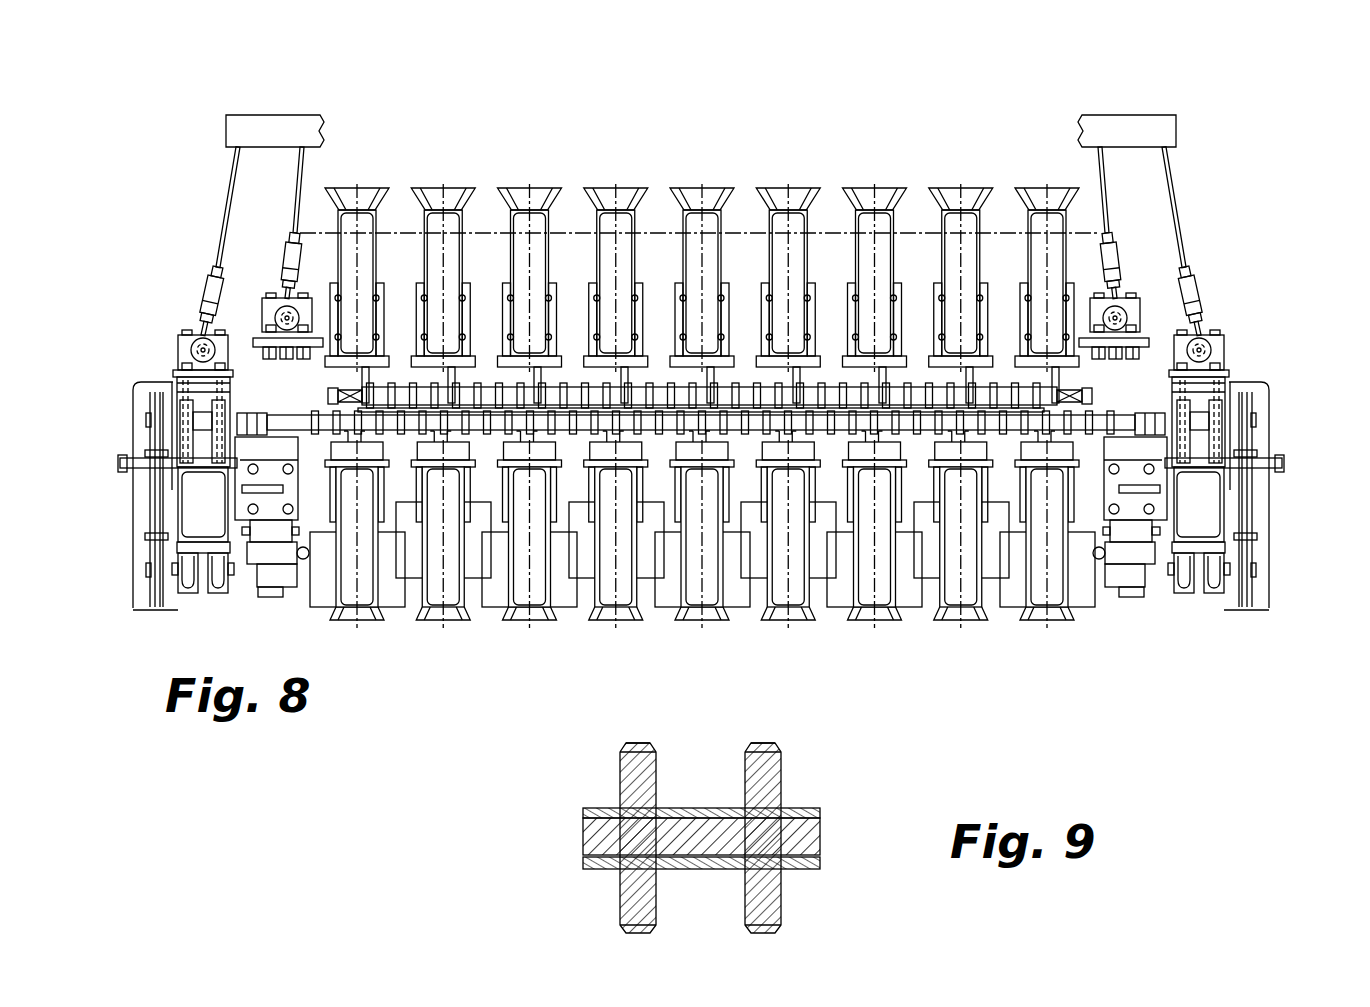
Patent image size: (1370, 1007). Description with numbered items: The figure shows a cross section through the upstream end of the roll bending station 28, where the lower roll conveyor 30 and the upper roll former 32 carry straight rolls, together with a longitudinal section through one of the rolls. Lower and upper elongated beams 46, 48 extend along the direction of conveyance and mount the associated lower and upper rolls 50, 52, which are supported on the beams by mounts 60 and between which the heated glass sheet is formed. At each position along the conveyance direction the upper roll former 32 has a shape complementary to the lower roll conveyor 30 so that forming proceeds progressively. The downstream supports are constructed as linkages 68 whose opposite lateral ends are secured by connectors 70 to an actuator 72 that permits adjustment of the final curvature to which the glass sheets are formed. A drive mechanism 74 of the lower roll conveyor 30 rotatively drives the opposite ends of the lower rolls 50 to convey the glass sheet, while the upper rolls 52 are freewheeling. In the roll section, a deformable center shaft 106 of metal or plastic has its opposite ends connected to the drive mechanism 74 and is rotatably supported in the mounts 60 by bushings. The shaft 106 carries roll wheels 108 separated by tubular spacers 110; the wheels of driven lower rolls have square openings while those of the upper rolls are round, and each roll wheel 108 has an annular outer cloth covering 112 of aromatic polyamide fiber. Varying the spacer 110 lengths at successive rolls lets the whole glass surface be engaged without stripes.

In FIG. 8, the roll bending station 28 is at (838, 142).
In FIG. 8, the lower roll conveyor 30 is at (1116, 404).
In FIG. 8, the upper roll former 32 is at (1047, 380).
In FIG. 8, the lower elongated beams 46 is at (506, 572).
In FIG. 8, the upper elongated beams 48 is at (935, 252).
In FIG. 8, the lower rolls 50 is at (820, 438).
In FIG. 8, the upper rolls 52 is at (828, 380).
In FIG. 8, the mounts 60 is at (690, 440).
In FIG. 8, the linkages 68 is at (663, 232).
In FIG. 8, the connectors 70 is at (296, 205).
In FIG. 8, the actuator 72 is at (228, 133).
In FIG. 8, the drive mechanism 74 is at (148, 402).
In FIG. 9, the center shaft 106 is at (820, 838).
In FIG. 9, the roll wheels 108 is at (628, 775).
In FIG. 9, the tubular spacers 110 is at (604, 870).
In FIG. 9, the cloth covering 112 is at (638, 742).